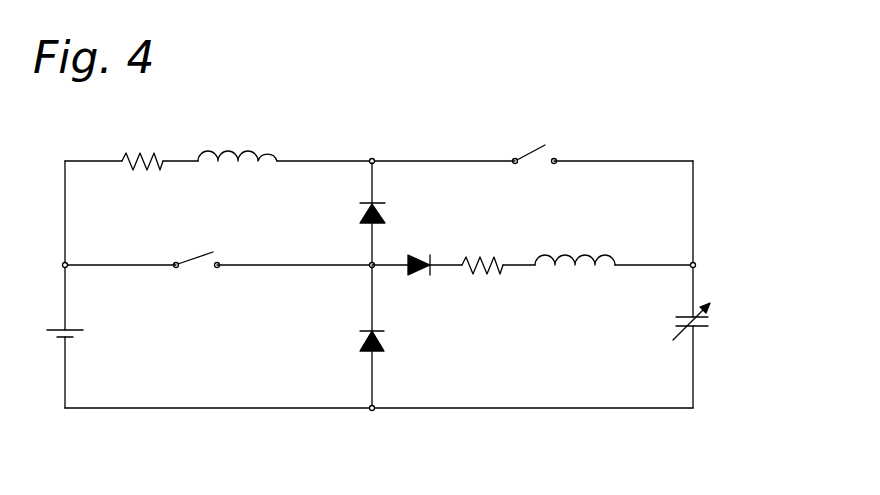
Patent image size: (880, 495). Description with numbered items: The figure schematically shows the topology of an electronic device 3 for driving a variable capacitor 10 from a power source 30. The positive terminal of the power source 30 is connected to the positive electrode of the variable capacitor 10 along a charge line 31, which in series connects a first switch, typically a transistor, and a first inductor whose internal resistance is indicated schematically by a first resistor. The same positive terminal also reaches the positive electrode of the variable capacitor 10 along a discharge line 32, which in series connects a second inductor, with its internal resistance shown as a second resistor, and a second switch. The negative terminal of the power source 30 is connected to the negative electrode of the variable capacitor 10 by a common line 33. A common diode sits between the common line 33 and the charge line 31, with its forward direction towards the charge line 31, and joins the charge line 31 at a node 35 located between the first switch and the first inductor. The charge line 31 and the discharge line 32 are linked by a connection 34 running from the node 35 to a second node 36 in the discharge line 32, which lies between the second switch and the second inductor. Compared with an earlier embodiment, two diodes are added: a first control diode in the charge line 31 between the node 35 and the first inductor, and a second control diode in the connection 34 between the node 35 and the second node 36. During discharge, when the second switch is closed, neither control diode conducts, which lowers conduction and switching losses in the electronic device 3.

The electronic device 3 is at (467, 100).
The variable capacitor 10 is at (698, 330).
The power source 30 is at (57, 335).
The charge line 31 is at (282, 267).
The discharge line 32 is at (622, 160).
The common line 33 is at (517, 410).
The connection 34 is at (374, 181).
The node 35 is at (374, 267).
The second node 36 is at (374, 159).